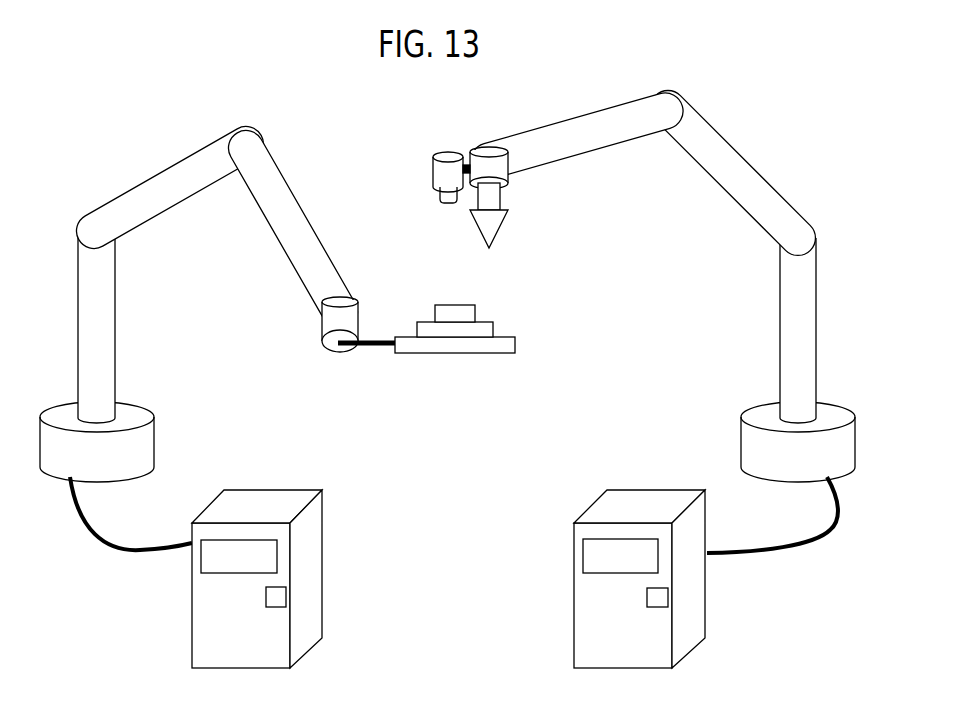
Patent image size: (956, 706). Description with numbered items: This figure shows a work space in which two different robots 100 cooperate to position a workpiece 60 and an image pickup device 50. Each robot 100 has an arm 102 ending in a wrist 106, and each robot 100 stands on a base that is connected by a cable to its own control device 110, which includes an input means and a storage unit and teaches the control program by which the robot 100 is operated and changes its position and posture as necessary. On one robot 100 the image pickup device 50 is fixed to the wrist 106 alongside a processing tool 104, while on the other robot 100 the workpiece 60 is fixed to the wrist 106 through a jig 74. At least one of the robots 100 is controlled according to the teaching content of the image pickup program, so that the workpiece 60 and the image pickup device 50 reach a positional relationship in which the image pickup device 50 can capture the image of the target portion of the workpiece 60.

The robot 100 is at (447, 271).
The arm 102 is at (287, 242).
The processing tool 104 is at (507, 223).
The wrist 106 is at (318, 327).
The image pickup device 50 is at (433, 177).
The workpiece 60 is at (430, 317).
The jig 74 is at (515, 345).
The control device 110 is at (270, 500).